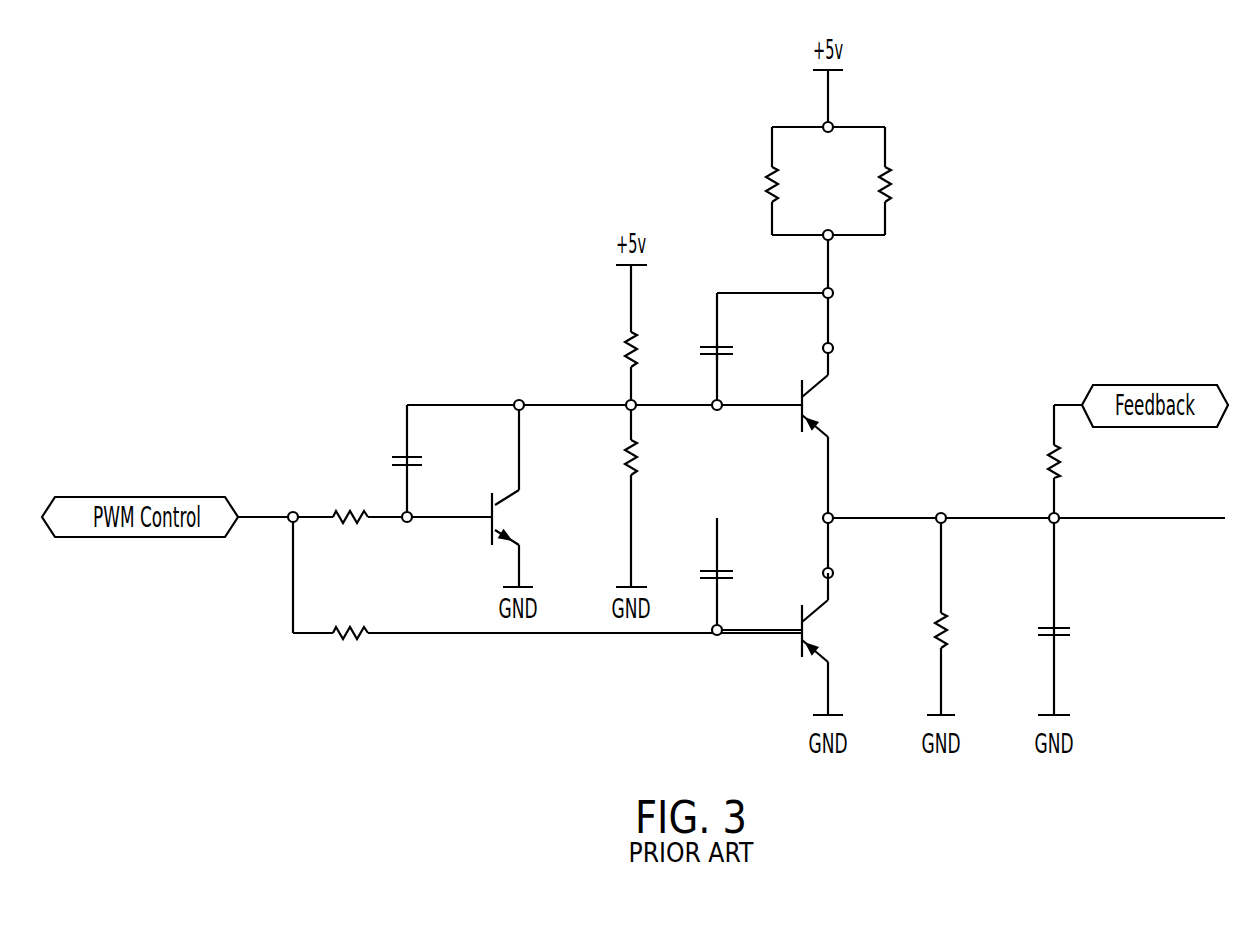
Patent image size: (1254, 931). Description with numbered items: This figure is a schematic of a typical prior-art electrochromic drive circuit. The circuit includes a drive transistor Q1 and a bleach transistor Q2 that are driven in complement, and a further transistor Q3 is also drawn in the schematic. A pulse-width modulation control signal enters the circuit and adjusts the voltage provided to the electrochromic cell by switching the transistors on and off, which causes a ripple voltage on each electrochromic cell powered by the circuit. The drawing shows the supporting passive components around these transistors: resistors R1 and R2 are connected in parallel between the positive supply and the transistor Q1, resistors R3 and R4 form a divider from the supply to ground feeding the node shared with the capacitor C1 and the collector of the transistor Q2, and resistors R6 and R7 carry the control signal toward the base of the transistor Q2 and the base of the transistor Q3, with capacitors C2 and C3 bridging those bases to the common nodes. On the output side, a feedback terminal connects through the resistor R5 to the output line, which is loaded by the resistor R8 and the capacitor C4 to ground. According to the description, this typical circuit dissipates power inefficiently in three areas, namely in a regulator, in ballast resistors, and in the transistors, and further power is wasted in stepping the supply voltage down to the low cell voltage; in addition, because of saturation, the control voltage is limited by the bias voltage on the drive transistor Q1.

The resistor R1 16R R1 is at (792, 181).
The resistor R2 16R R2 is at (904, 181).
The resistor R3 806R R3 is at (656, 350).
The resistor R4 806R R4 is at (656, 461).
The resistor R5 39k R5 is at (1072, 465).
The resistor R6 4.7k R6 is at (350, 520).
The resistor R7 1k R7 is at (350, 633).
The resistor R8 200R R8 is at (965, 636).
The capacitor C1 0.1 uF C1 is at (746, 348).
The capacitor C2 0.1 uF C2 is at (437, 456).
The capacitor C3 0.1 uF C3 is at (746, 573).
The capacitor C4 0.01 uF C4 is at (1089, 636).
The drive transistor Q1 is at (857, 408).
The bleach transistor Q2 is at (552, 510).
The transistor Q3 SBCP56 Q3 is at (854, 621).